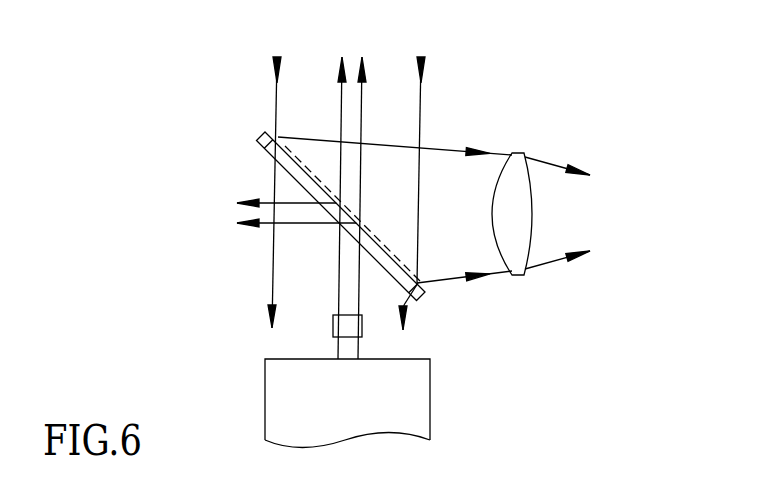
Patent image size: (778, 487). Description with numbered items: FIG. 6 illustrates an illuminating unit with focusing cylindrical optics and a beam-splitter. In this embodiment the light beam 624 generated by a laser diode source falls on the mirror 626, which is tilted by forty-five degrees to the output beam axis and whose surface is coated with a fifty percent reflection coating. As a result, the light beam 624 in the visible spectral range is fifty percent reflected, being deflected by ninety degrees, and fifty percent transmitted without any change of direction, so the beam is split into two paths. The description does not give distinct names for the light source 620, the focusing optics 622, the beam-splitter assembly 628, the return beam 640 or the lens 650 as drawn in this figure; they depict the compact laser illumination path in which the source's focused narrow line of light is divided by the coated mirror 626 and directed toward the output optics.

The light source 620 is at (418, 412).
The aperture 622 is at (362, 327).
The light beam 624 is at (338, 287).
The mirror 626 is at (425, 297).
The beam splitter 628 is at (278, 137).
The return light beam 640 is at (421, 99).
The lens 650 is at (516, 155).